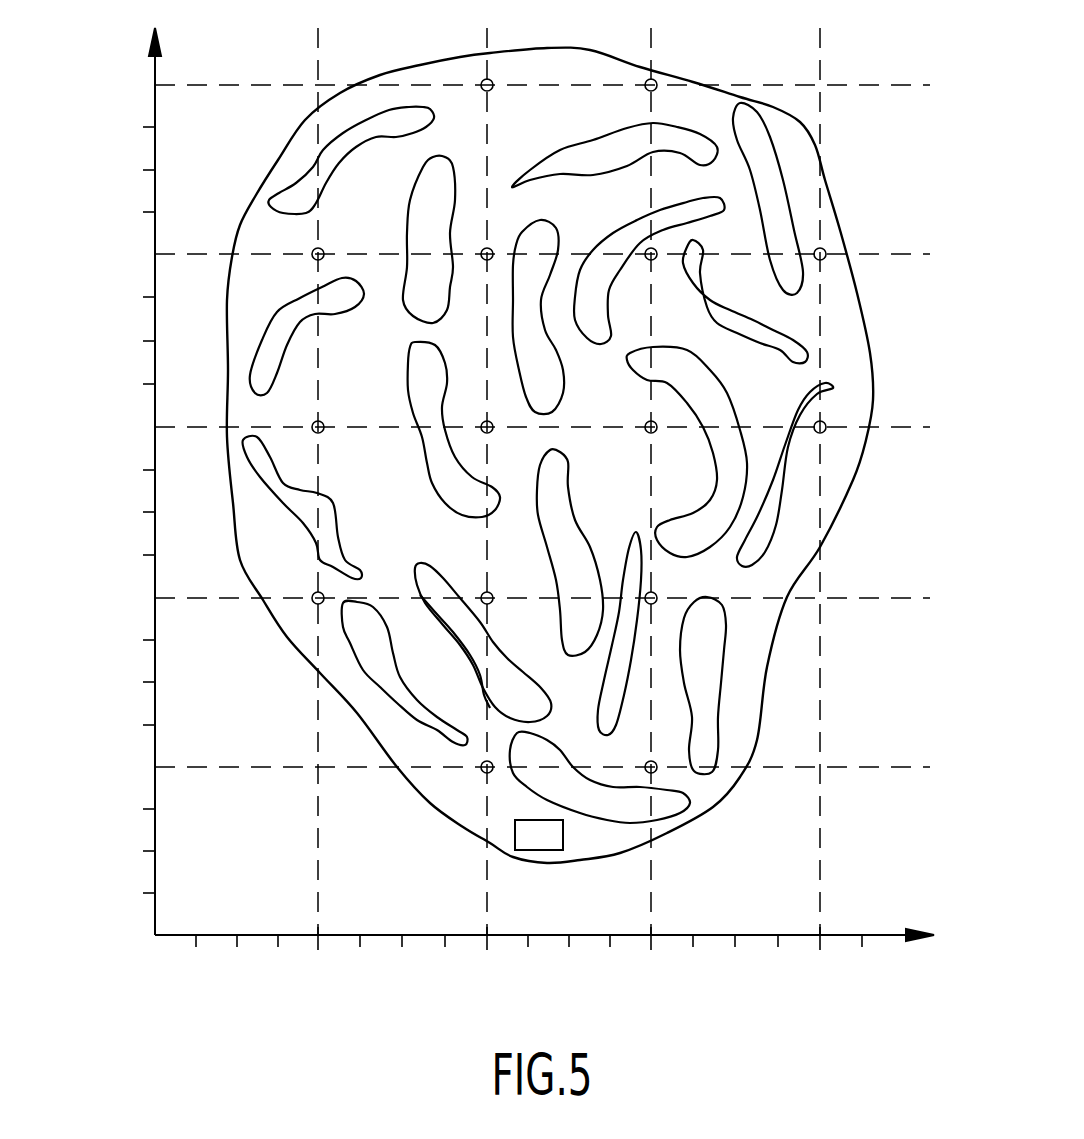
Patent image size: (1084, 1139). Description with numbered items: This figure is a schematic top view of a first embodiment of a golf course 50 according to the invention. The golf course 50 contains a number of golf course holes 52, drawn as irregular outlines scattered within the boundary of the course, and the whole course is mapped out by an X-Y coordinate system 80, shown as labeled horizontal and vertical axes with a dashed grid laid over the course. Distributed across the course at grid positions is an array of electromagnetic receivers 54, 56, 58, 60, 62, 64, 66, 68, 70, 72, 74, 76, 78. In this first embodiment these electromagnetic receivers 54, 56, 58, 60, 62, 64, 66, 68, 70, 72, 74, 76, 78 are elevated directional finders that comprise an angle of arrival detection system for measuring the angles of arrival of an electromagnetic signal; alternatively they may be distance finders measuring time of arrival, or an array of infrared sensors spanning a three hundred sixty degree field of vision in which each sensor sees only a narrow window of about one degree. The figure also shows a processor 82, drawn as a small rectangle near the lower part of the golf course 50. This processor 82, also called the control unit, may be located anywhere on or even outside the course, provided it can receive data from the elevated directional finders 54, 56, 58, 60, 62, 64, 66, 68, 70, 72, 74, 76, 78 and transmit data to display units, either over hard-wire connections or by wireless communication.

The golf course 50 is at (570, 456).
The golf course holes 52 is at (549, 480).
The electromagnetic receiver 54 is at (456, 59).
The electromagnetic receiver 56 is at (685, 60).
The electromagnetic receiver 58 is at (285, 239).
The electromagnetic receiver 60 is at (469, 297).
The electromagnetic receiver 62 is at (670, 291).
The electromagnetic receiver 64 is at (348, 402).
The electromagnetic receiver 66 is at (505, 451).
The electromagnetic receiver 68 is at (620, 410).
The electromagnetic receiver 70 is at (289, 566).
The electromagnetic receiver 72 is at (463, 566).
The electromagnetic receiver 74 is at (684, 582).
The electromagnetic receiver 76 is at (465, 785).
The electromagnetic receiver 78 is at (610, 750).
The X-Y coordinate system 80 is at (521, 508).
The processor 82 is at (575, 865).